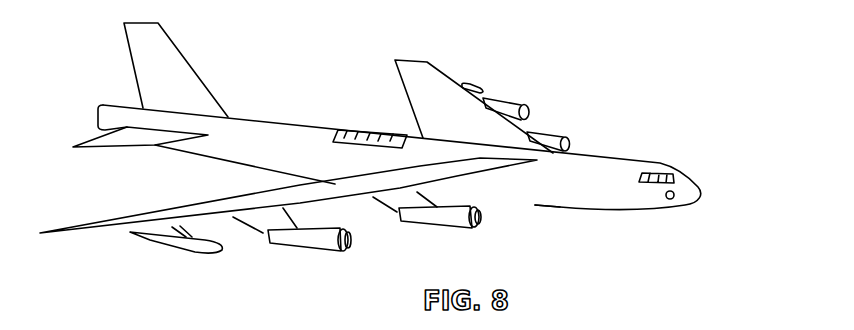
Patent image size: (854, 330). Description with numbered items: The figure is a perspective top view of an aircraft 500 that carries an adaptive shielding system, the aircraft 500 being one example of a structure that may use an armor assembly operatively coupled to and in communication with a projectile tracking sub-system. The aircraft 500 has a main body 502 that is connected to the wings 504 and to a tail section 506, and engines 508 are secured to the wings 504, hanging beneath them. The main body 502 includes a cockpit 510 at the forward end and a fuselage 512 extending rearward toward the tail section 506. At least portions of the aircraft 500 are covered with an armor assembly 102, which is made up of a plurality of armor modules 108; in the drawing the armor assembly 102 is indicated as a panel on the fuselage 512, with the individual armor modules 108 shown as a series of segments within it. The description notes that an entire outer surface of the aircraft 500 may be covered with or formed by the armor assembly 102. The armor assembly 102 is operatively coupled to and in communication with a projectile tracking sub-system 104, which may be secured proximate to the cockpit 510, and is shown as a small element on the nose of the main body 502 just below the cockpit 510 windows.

The aircraft 500 is at (416, 169).
The main body 502 is at (633, 155).
The wings 504 is at (435, 80).
The tail section 506 is at (183, 57).
The engines 508 is at (330, 253).
The cockpit 510 is at (678, 170).
The fuselage 512 is at (570, 173).
The armor assembly 102 is at (340, 129).
The projectile tracking sub-system 104 is at (674, 195).
The armor modules 108 is at (380, 130).